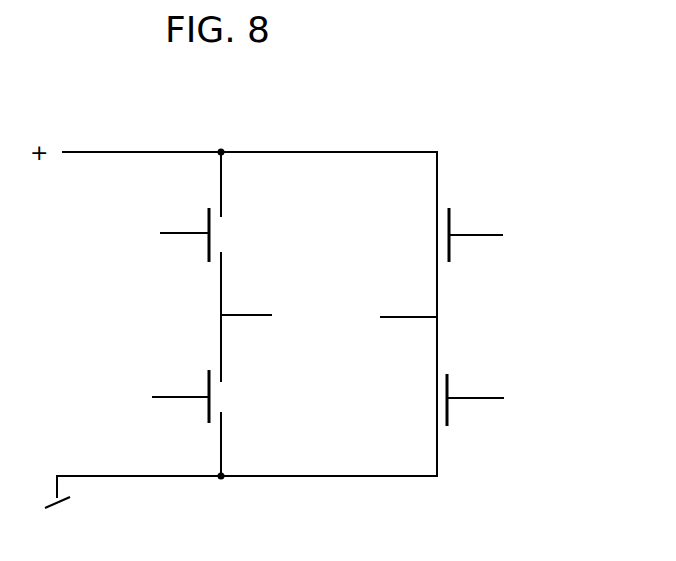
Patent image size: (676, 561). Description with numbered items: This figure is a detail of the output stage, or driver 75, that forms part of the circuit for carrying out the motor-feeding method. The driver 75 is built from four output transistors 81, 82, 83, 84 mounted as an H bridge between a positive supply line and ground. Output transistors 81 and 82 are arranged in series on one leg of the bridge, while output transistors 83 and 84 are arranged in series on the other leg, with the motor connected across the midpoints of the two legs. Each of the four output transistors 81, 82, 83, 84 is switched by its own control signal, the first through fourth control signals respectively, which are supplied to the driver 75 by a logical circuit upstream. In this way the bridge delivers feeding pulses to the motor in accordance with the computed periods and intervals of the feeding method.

The output stage (driver) 75 is at (288, 147).
The output transistor 81 is at (222, 226).
The output transistor 82 is at (222, 391).
The output transistor 83 is at (446, 229).
The output transistor 84 is at (443, 394).